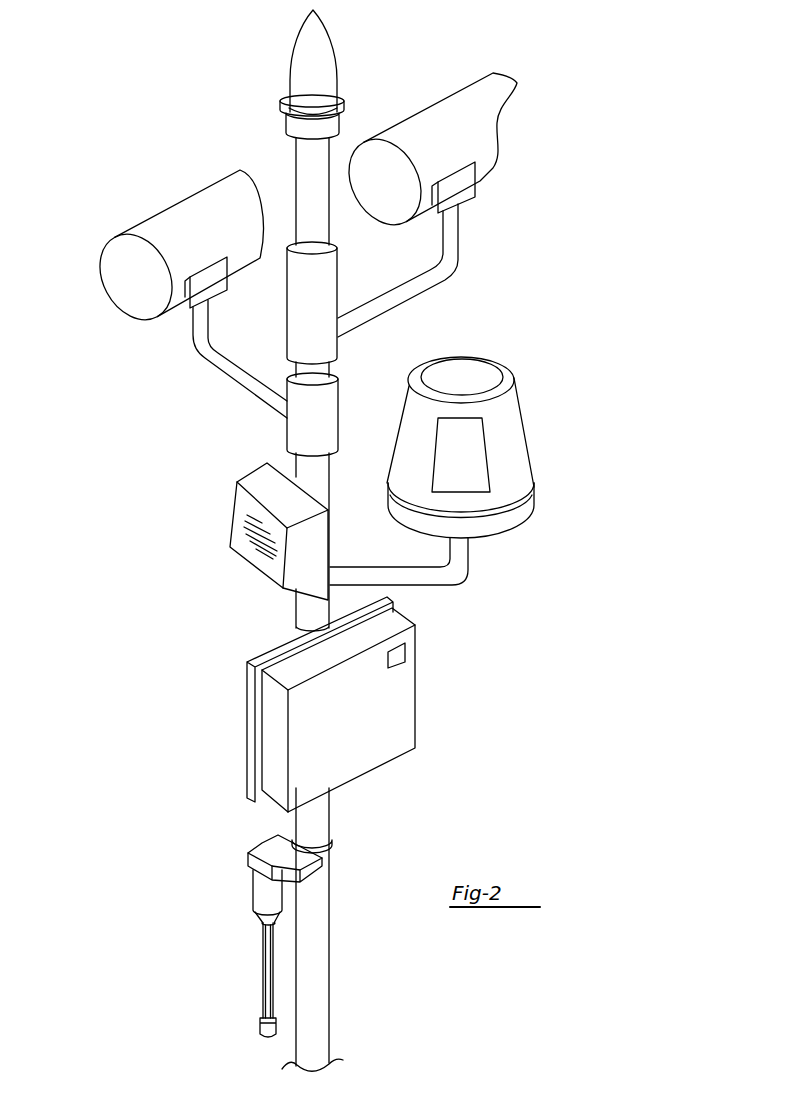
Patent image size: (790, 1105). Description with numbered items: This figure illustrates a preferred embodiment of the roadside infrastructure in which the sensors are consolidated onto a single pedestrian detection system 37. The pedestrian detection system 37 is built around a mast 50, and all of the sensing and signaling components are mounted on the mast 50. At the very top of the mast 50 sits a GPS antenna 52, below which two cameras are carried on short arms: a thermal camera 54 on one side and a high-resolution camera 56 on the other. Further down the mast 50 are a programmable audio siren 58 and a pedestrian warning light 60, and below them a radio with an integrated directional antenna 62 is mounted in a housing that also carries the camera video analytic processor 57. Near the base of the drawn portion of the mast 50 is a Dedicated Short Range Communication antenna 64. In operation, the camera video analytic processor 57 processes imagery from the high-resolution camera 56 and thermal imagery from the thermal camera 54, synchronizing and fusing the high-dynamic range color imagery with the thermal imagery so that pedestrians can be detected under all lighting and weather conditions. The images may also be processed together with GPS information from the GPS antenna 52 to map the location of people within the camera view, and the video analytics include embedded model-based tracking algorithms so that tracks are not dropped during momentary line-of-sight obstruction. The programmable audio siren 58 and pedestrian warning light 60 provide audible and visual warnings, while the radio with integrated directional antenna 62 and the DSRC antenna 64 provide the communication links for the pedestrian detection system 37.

The pedestrian detection system 37 is at (561, 143).
The mast 50 is at (317, 812).
The GPS antenna 52 is at (330, 72).
The thermal camera 54 is at (112, 268).
The high-resolution camera 56 is at (487, 140).
The camera video analytic processor 57 is at (403, 655).
The programmable audio siren 58 is at (250, 528).
The pedestrian warning light 60 is at (513, 445).
The radio with an integrated directional antenna 62 is at (405, 712).
The Dedicated Short Range Communication (DSRC) antenna 64 is at (260, 892).